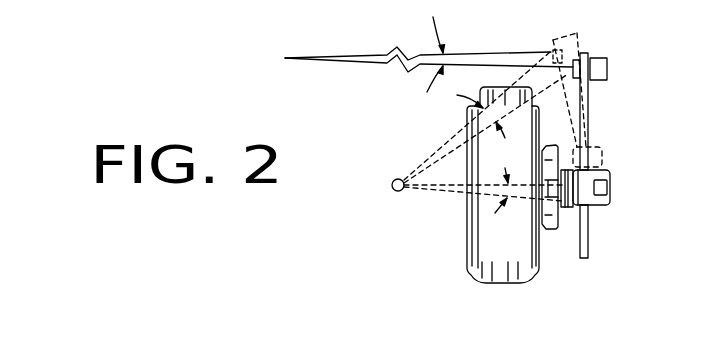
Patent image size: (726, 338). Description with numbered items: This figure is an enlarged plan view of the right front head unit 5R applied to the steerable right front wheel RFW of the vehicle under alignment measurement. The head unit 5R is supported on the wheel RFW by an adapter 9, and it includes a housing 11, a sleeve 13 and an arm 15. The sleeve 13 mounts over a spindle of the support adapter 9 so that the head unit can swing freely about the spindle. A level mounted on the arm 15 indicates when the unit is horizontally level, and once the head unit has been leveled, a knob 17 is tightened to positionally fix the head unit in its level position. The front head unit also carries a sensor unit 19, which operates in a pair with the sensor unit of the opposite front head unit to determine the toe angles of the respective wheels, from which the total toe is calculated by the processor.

The right front head unit 5R is at (612, 213).
The adapter 9 is at (557, 238).
The housing 11 is at (600, 213).
The sleeve 13 is at (603, 166).
The arm 15 is at (588, 95).
The knob 17 is at (613, 183).
The sensor unit 19 is at (601, 68).
The right front wheel RFW is at (459, 185).